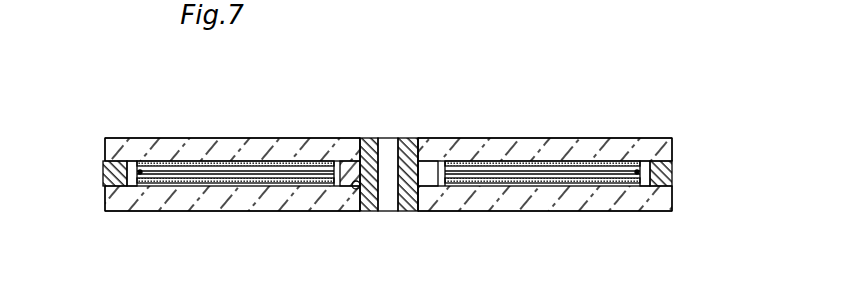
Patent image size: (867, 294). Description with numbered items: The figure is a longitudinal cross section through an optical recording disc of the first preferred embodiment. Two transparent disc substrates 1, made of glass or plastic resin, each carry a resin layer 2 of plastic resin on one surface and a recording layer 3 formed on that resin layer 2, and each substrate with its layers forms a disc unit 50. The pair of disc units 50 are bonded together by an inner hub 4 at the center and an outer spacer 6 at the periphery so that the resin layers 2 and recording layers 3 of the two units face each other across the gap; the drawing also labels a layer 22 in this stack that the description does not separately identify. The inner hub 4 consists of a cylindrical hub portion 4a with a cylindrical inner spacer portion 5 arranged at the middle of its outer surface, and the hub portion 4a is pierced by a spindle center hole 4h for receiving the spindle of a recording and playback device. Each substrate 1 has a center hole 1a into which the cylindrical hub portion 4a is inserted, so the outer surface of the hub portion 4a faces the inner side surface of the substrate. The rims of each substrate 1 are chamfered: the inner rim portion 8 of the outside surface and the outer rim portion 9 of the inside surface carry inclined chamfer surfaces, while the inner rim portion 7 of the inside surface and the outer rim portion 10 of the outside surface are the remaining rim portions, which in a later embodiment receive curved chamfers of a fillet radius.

The transparent disc substrate 1 is at (172, 150).
The center hole 1a is at (348, 190).
The resin layer 2 is at (289, 170).
The protective layer 22 is at (246, 164).
The recording layer 3 is at (201, 172).
The inner hub 4 is at (371, 176).
The cylindrical hub portion 4a is at (405, 152).
The spindle center hole 4h is at (388, 205).
The cylindrical inner spacer portion 5 is at (347, 168).
The outer spacer 6 is at (110, 175).
The inner rim portion of the inside surface 7 is at (380, 139).
The inner rim portion of the outside surface 8 is at (358, 156).
The outer rim portion of the inside surface 9 is at (110, 160).
The outer rim portion of the outside surface 10 is at (105, 139).
The disc unit 50 is at (150, 136).